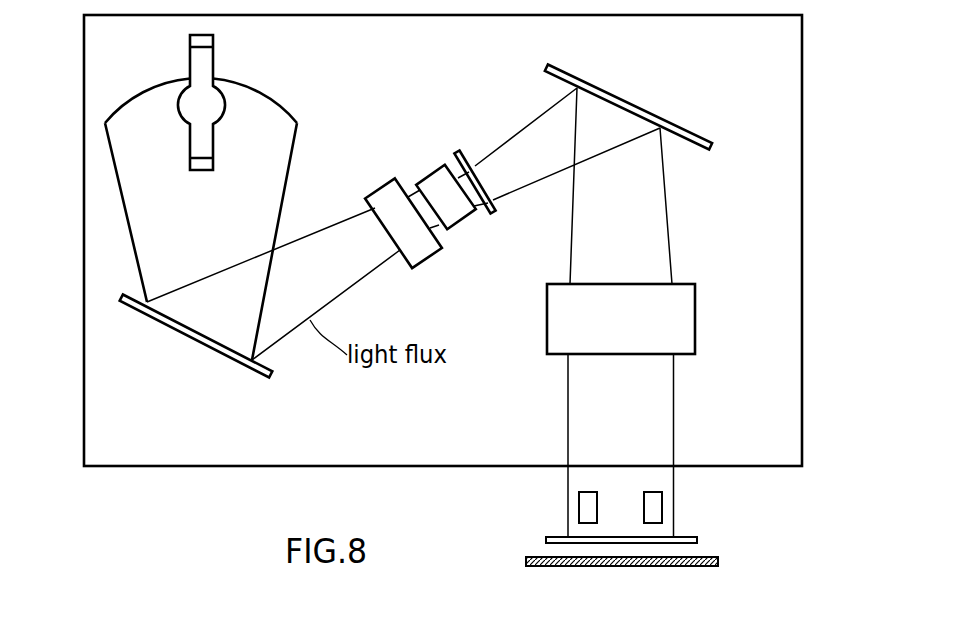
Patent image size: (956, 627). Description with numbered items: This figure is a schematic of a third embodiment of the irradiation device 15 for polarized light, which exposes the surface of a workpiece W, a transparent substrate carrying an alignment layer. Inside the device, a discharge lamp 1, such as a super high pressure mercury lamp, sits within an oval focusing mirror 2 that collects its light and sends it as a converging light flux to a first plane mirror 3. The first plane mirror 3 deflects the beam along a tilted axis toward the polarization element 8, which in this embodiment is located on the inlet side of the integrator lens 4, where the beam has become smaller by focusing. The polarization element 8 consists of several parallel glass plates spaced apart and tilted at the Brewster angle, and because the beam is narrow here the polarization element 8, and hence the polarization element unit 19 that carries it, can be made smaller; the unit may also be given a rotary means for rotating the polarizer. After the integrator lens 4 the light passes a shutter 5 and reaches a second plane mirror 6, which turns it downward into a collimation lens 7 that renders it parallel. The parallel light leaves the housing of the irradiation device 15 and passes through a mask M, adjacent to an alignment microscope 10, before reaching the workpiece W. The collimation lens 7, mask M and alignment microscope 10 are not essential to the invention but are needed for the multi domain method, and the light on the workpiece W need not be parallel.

The discharge lamp 1 is at (213, 58).
The oval focusing mirror 2 is at (293, 112).
The first plane mirror 3 is at (182, 336).
The integrator lens 4 is at (433, 173).
The shutter 5 is at (458, 152).
The second plane mirror 6 is at (648, 111).
The collimation lens 7 is at (695, 298).
The polarization element 8 is at (428, 258).
The polarization element unit 19 is at (412, 283).
The alignment microscope 10 is at (662, 500).
The mask M is at (690, 537).
The workpiece W is at (716, 556).
The irradiation device 15 is at (123, 467).